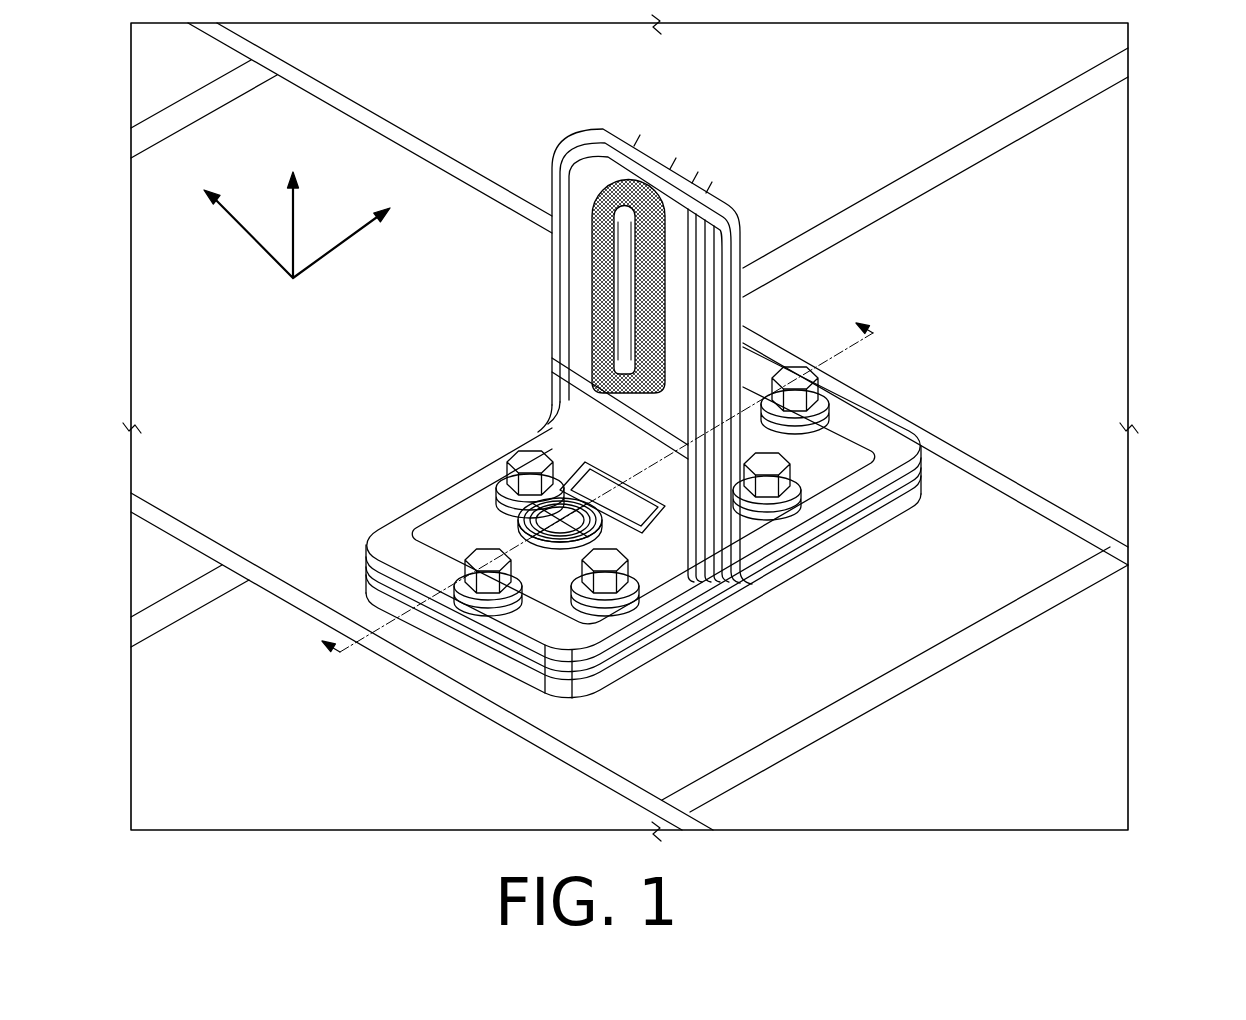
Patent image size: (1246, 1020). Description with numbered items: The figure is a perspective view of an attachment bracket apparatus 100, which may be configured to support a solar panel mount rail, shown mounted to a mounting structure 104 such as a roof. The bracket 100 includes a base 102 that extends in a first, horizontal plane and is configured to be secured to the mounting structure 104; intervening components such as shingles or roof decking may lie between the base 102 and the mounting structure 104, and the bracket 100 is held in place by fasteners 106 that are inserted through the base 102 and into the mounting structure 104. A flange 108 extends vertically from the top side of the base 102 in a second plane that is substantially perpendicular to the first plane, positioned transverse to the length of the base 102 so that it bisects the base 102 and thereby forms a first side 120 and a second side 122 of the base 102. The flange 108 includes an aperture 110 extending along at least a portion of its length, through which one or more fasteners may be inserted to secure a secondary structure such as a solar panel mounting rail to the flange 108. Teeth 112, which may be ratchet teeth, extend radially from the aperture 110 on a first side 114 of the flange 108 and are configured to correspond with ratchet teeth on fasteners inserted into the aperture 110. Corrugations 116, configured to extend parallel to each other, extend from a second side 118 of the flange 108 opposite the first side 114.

The attachment bracket apparatus 100 is at (1135, 128).
The base 102 is at (657, 395).
The mounting structure 104 is at (890, 760).
The fasteners 106 is at (822, 408).
The flange 108 is at (651, 338).
The aperture 110 is at (604, 296).
The teeth 112 is at (601, 329).
The first side 114 is at (556, 250).
The corrugations 116 is at (742, 314).
The second side 118 is at (745, 230).
The first side 120 is at (691, 522).
The second side 122 is at (903, 541).